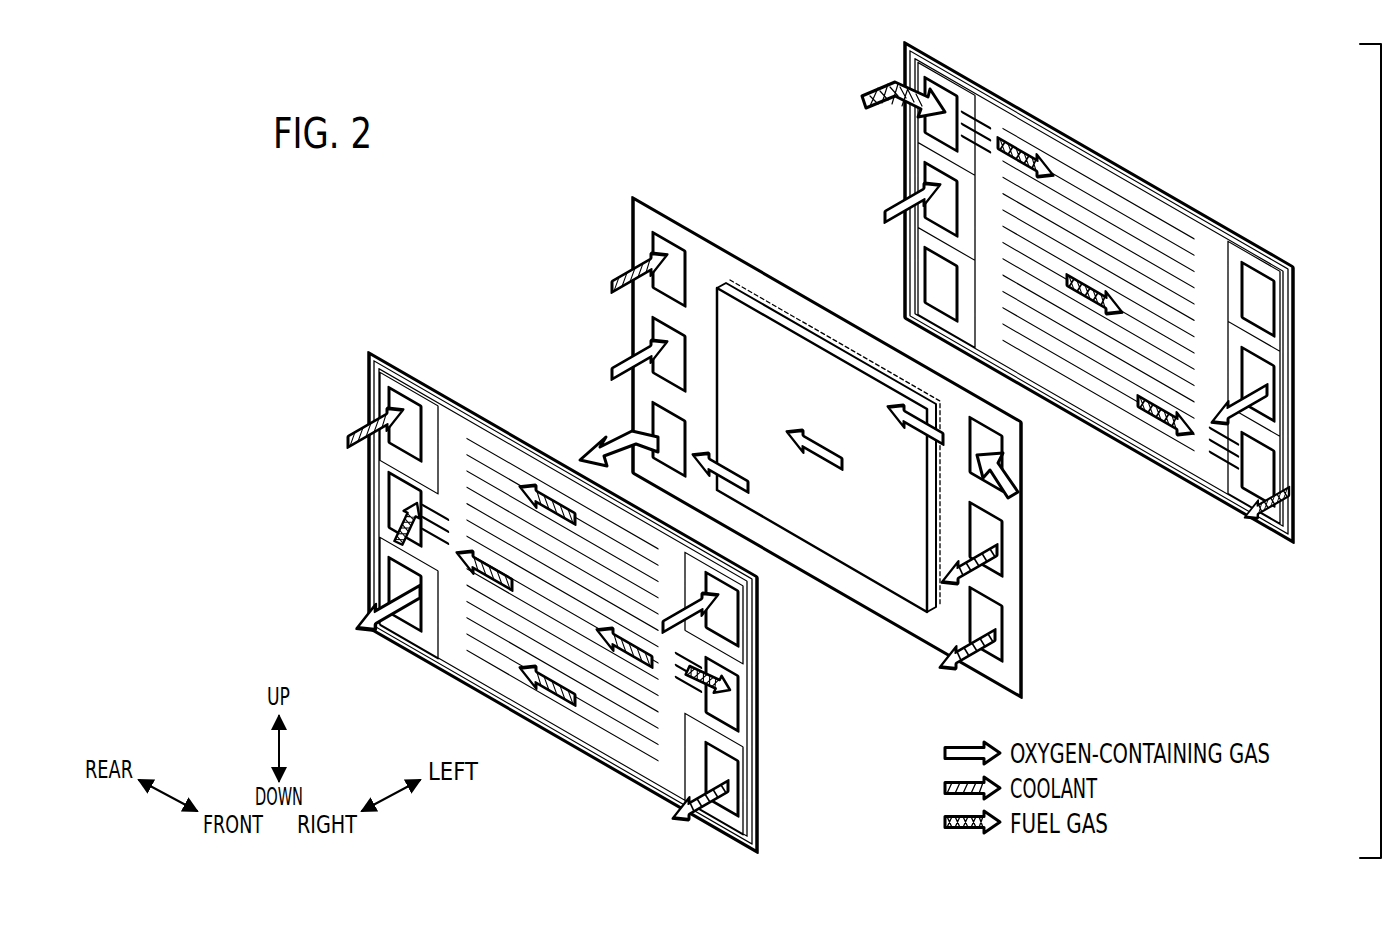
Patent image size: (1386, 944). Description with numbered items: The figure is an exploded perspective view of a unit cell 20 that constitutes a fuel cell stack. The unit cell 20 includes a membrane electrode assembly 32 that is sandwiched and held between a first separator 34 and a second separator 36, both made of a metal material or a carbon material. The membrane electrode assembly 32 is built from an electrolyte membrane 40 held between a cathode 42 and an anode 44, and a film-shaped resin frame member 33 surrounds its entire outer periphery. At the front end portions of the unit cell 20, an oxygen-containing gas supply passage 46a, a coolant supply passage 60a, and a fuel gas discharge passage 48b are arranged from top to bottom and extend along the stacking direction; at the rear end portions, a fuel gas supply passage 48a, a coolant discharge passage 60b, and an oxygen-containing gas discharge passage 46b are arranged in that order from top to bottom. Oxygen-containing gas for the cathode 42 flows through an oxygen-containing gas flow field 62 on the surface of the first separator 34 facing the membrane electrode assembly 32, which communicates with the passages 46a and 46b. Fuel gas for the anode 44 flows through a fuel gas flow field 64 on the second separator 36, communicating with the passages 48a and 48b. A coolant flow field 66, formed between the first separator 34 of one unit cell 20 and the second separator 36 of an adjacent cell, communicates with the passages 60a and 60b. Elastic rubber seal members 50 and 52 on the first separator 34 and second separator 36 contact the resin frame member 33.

The unit cell 20 is at (417, 227).
The membrane electrode assembly 32 is at (818, 400).
The resin frame member 33 is at (725, 268).
The first separator 34 is at (362, 355).
The second separator 36 is at (898, 52).
The electrolyte membrane 40 is at (825, 375).
The cathode 42 is at (759, 332).
The anode 44 is at (795, 318).
The oxygen-containing gas supply passage 46a is at (728, 623).
The oxygen-containing gas discharge passage 46b is at (392, 574).
The fuel gas supply passage 48a is at (392, 398).
The fuel gas discharge passage 48b is at (728, 777).
The seal member 50 is at (463, 410).
The seal member 52 is at (1128, 180).
The coolant supply passage 60a is at (728, 707).
The coolant discharge passage 60b is at (392, 490).
The oxygen-containing gas flow field 62 is at (586, 676).
The fuel gas flow field 64 is at (1130, 393).
The coolant flow field 66 is at (494, 648).